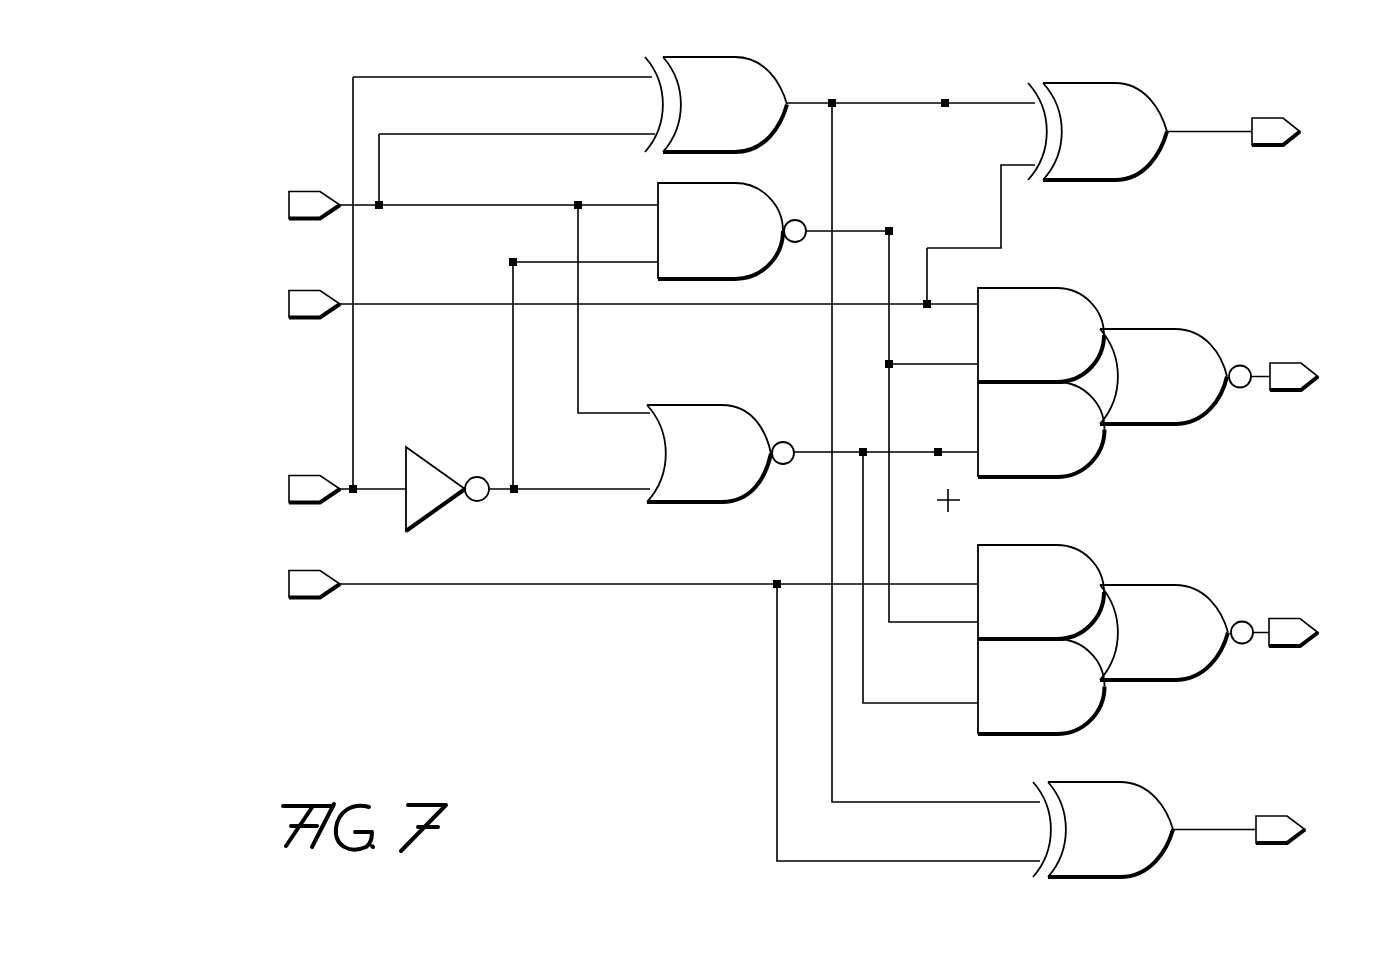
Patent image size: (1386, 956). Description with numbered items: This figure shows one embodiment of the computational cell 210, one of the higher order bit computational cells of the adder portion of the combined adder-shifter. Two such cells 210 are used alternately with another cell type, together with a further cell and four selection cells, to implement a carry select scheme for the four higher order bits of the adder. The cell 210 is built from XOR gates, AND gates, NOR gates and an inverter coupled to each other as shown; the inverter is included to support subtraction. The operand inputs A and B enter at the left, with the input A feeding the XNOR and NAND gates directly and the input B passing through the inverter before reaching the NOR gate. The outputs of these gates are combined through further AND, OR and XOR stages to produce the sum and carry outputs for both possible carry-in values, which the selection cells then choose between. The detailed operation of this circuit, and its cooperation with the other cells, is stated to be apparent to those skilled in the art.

The computational cell 210 is at (1306, 93).
The input port A is at (304, 205).
The input port B is at (305, 489).